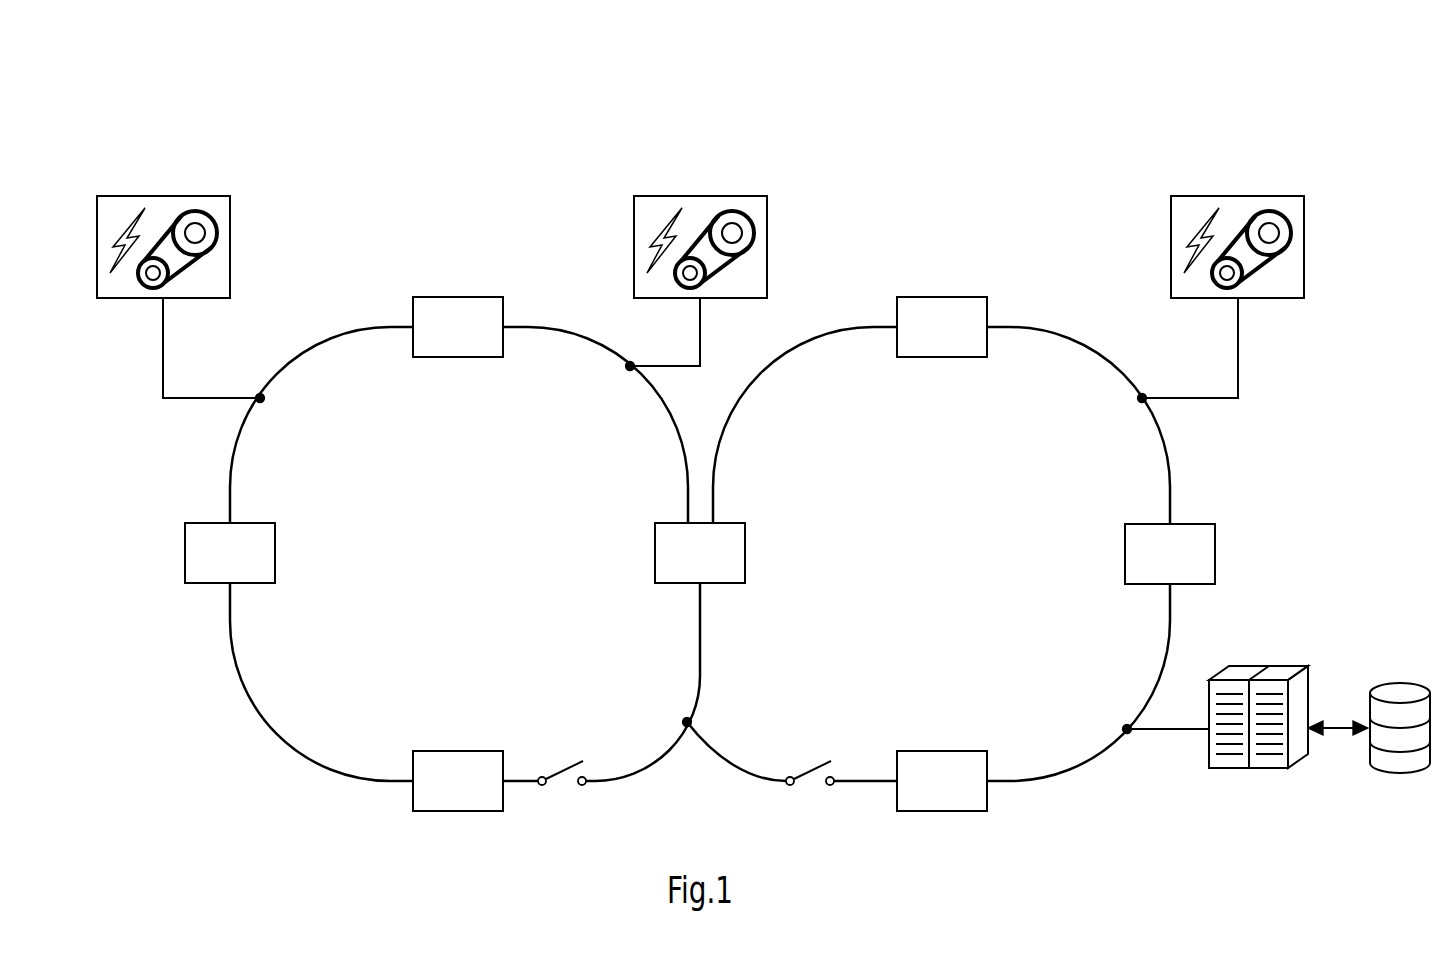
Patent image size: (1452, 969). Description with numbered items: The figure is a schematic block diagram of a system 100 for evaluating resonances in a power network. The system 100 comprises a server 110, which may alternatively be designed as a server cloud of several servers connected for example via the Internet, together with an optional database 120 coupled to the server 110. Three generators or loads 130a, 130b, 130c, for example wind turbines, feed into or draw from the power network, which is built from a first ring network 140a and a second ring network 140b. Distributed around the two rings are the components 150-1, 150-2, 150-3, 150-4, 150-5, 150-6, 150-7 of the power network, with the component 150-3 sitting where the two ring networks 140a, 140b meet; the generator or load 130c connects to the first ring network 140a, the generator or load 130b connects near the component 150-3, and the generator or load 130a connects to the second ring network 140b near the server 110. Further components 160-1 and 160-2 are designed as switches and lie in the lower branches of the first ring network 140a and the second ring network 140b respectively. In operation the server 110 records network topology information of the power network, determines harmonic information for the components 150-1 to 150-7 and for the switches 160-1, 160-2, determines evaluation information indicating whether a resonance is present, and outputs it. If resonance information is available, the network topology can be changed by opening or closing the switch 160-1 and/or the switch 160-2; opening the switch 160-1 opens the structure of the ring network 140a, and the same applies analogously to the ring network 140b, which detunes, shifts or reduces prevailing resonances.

The system 100 is at (1394, 94).
The server 110 is at (1268, 770).
The database 120 is at (1398, 766).
The generator or load 130a is at (1239, 352).
The generator or load 130b is at (701, 349).
The generator or load 130c is at (163, 352).
The first ring network 140a is at (487, 566).
The second ring network 140b is at (968, 566).
The component 150-1 is at (262, 565).
The component 150-2 is at (490, 339).
The component 150-3 is at (732, 565).
The component 150-4 is at (490, 793).
The component 150-5 is at (974, 339).
The component 150-6 is at (1202, 566).
The component 150-7 is at (974, 793).
The component designed as switch 160-1 is at (563, 772).
The component designed as switch 160-2 is at (810, 771).